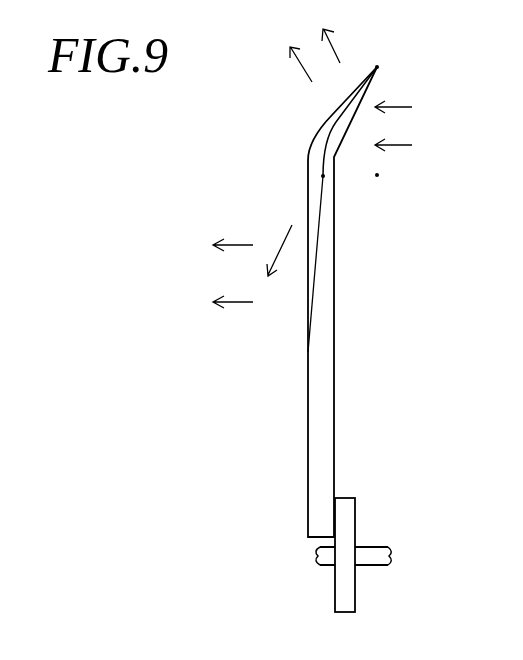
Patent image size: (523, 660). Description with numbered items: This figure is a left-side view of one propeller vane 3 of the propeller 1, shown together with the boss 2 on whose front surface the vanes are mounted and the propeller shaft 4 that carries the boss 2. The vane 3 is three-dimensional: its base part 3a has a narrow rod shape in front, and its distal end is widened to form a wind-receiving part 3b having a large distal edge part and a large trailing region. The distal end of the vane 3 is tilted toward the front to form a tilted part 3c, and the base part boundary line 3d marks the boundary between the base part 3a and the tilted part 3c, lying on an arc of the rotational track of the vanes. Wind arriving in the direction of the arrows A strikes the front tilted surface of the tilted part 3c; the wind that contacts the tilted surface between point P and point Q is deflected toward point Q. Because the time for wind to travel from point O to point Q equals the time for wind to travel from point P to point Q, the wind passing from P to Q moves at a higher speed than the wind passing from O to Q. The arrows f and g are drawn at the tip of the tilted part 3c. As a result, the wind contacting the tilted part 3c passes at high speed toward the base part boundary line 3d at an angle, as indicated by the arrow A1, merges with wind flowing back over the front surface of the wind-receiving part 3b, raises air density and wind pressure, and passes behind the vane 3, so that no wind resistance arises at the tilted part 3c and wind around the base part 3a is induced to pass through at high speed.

The propeller 1 is at (280, 497).
The boss 2 is at (355, 598).
The propeller vane 3 is at (314, 302).
The base part 3a is at (334, 455).
The wind-receiving part 3b is at (318, 240).
The tilted part 3c is at (318, 115).
The base part boundary line 3d is at (325, 176).
The propeller shaft 4 is at (390, 562).
The point P is at (377, 67).
The point Q is at (323, 176).
The point O is at (377, 175).
The wind direction A is at (406, 125).
The arrow A1 is at (284, 261).
The force direction f is at (306, 75).
The force direction g is at (339, 55).